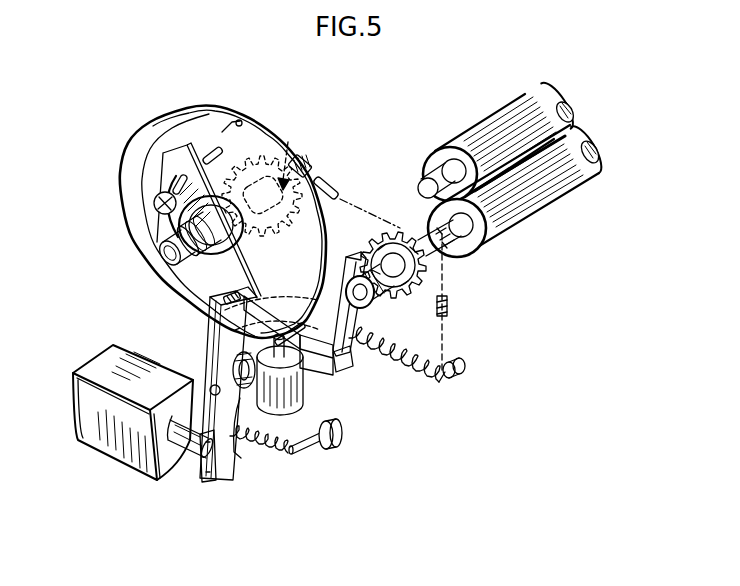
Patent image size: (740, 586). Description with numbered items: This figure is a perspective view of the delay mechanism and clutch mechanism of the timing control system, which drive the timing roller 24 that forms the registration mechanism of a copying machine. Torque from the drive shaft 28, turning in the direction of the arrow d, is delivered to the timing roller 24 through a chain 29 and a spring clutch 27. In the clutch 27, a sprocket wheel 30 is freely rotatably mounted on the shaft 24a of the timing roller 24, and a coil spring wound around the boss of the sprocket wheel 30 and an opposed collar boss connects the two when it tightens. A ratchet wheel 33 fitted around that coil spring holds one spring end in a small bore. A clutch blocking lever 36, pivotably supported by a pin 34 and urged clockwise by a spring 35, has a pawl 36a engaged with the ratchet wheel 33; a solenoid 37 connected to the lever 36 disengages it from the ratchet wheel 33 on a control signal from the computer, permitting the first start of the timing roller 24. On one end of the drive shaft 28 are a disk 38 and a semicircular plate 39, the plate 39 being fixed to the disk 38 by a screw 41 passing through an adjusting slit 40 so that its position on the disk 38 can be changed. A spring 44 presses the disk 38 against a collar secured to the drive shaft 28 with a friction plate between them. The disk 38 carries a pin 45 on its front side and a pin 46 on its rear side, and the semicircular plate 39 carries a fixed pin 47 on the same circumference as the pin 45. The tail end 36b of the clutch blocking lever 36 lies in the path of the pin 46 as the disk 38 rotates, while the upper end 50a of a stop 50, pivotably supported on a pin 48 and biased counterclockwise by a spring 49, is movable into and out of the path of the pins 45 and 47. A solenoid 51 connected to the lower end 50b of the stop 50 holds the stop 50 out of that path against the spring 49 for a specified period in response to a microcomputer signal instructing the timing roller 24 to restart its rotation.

The timing roller 24 is at (546, 186).
The shaft of the timing roller 24a is at (452, 248).
The spring clutch 27 is at (395, 362).
The drive shaft 28 is at (273, 220).
The chain 29 is at (330, 187).
The sprocket wheel 30 is at (446, 260).
The ratchet wheel 33 is at (393, 298).
The pin 34 is at (340, 352).
The spring 35 is at (402, 366).
The clutch blocking lever 36 is at (333, 312).
The pawl 36a is at (351, 255).
The tail end of the clutch blocking lever 36b is at (274, 428).
The solenoid 37 is at (300, 384).
The disk 38 is at (243, 138).
The semicircular plate 39 is at (205, 258).
The adjusting slit 40 is at (172, 178).
The screw 41 is at (154, 203).
The spring 44 is at (215, 242).
The pin 45 is at (211, 152).
The pin 46 is at (236, 120).
The fixed pin 47 is at (243, 286).
The pin 48 is at (240, 453).
The spring 49 is at (292, 452).
The stop 50 is at (212, 379).
The upper end of the stop 50a is at (236, 295).
The lower end of the stop 50b is at (227, 480).
The solenoid 51 is at (97, 366).
The arrow d is at (290, 152).